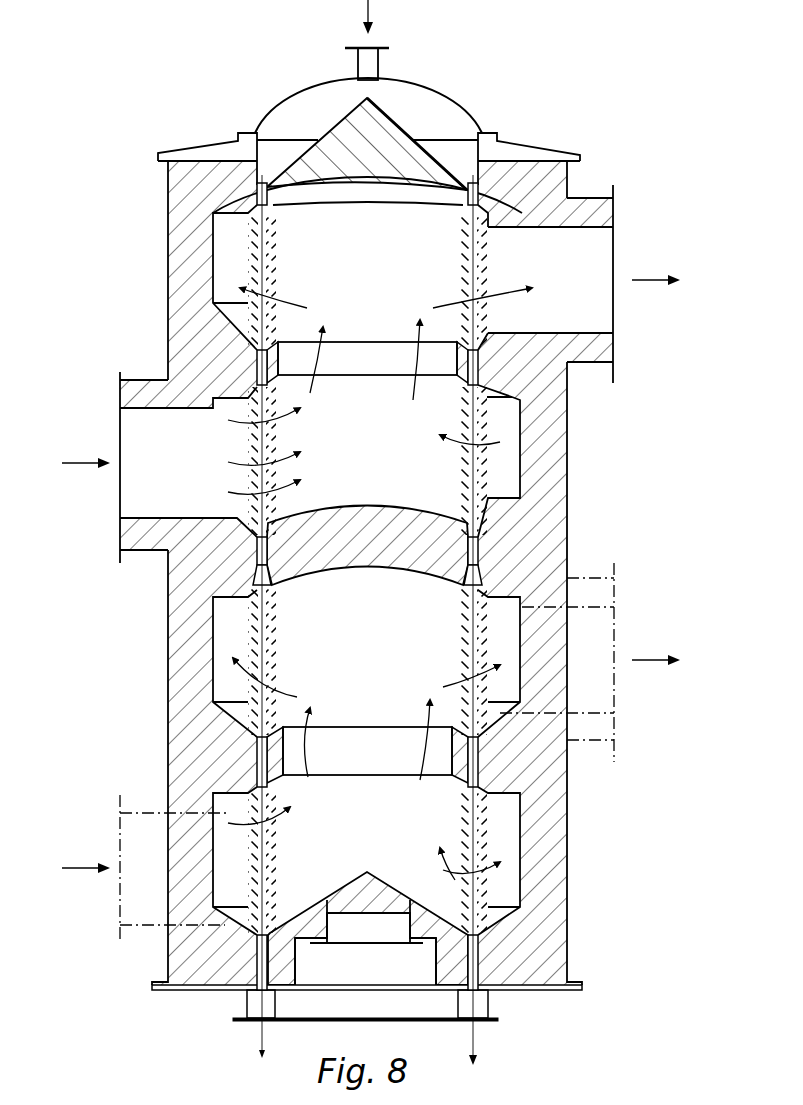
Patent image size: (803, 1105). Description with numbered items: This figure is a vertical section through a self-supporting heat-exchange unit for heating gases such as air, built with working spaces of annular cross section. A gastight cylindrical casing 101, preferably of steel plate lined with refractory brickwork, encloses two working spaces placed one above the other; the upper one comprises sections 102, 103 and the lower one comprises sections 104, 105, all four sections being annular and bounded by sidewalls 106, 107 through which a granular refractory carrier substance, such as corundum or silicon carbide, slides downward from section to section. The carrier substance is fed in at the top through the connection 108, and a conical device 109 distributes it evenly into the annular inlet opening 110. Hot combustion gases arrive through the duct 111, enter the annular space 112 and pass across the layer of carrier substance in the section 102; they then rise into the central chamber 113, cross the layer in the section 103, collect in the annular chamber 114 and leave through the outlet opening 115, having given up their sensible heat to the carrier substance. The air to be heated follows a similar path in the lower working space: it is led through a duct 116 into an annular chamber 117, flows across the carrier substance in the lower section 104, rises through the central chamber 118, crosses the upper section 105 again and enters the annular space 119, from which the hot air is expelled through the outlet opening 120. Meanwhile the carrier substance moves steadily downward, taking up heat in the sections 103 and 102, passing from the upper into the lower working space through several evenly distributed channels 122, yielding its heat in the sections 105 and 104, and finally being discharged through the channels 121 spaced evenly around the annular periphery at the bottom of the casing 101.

The cylindrical casing 101 is at (168, 613).
The section 102 is at (262, 441).
The section 103 is at (263, 258).
The section 104 is at (262, 850).
The section 105 is at (262, 658).
The sidewall 106 is at (485, 282).
The sidewall 107 is at (468, 858).
The connection 108 is at (380, 60).
The conical device 109 is at (398, 118).
The annular inlet opening 110 is at (500, 158).
The duct 111 is at (155, 435).
The annular space 112 is at (503, 462).
The central chamber 113 is at (367, 360).
The annular chamber 114 is at (235, 268).
The outlet opening 115 is at (582, 252).
The duct 116 is at (142, 833).
The annular chamber 117 is at (508, 850).
The central chamber 118 is at (367, 741).
The annular space 119 is at (222, 680).
The outlet opening 120 is at (595, 620).
The channels 121 is at (480, 945).
The channels 122 is at (478, 552).